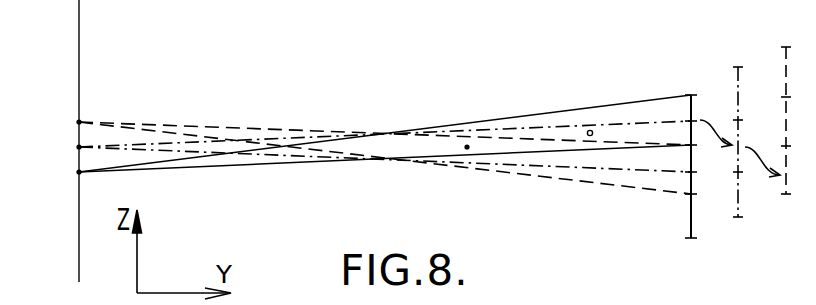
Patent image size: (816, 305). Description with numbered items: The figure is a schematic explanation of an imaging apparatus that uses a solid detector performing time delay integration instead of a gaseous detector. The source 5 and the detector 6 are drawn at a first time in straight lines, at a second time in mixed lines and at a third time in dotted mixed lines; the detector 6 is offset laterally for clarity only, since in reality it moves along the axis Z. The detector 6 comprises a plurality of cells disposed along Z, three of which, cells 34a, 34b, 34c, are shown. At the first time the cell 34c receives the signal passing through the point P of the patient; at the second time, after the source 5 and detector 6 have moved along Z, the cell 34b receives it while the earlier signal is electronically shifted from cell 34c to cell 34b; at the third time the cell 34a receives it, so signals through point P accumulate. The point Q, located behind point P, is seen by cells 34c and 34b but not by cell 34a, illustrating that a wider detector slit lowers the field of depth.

The source 5 is at (78, 174).
The detector 6 is at (686, 238).
The cell 34a is at (692, 225).
The cell 34b is at (692, 183).
The cell 34c is at (720, 68).
The point P is at (466, 146).
The point Q is at (588, 131).